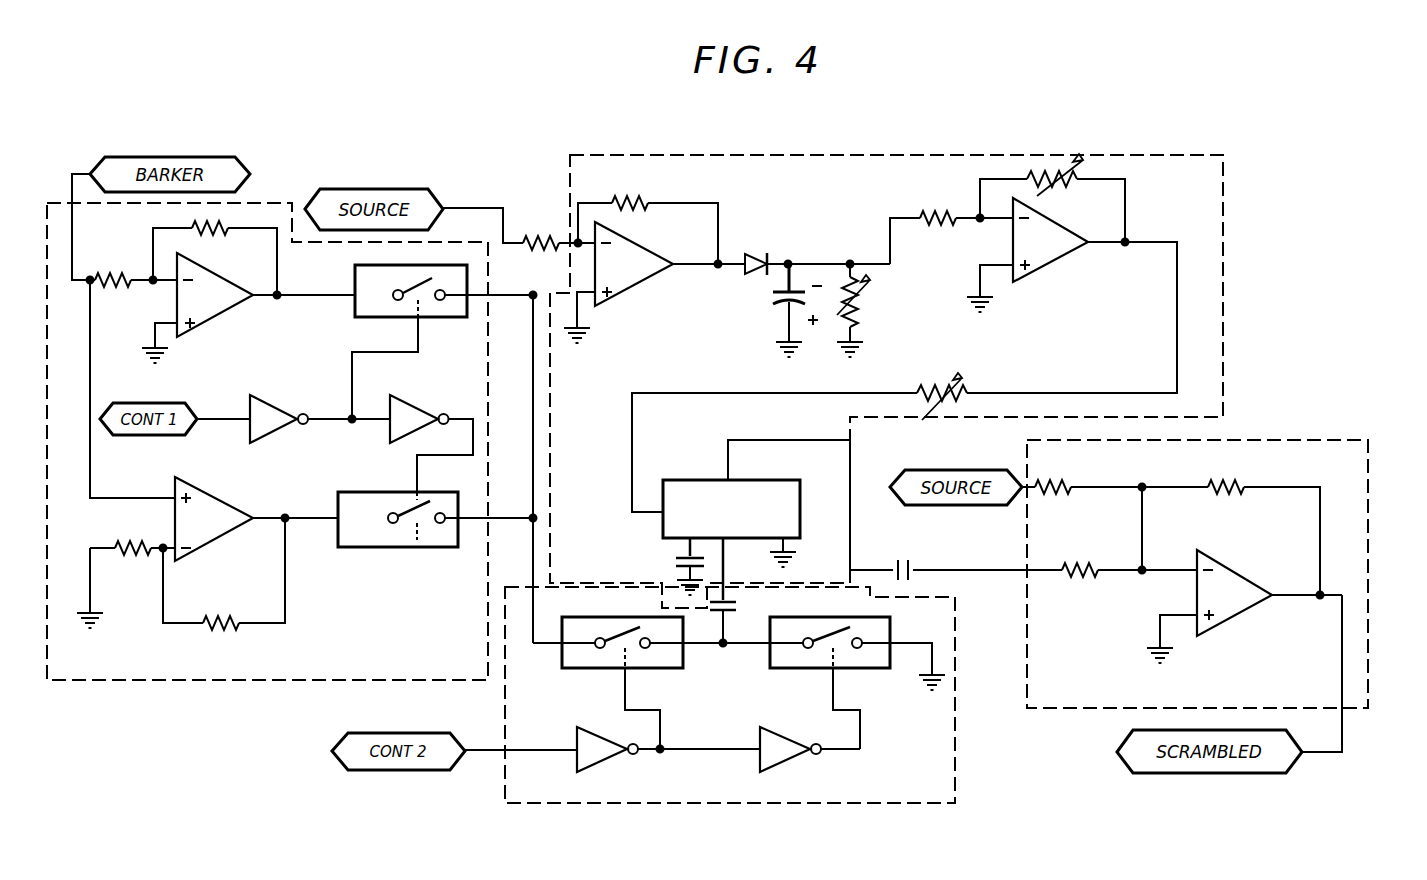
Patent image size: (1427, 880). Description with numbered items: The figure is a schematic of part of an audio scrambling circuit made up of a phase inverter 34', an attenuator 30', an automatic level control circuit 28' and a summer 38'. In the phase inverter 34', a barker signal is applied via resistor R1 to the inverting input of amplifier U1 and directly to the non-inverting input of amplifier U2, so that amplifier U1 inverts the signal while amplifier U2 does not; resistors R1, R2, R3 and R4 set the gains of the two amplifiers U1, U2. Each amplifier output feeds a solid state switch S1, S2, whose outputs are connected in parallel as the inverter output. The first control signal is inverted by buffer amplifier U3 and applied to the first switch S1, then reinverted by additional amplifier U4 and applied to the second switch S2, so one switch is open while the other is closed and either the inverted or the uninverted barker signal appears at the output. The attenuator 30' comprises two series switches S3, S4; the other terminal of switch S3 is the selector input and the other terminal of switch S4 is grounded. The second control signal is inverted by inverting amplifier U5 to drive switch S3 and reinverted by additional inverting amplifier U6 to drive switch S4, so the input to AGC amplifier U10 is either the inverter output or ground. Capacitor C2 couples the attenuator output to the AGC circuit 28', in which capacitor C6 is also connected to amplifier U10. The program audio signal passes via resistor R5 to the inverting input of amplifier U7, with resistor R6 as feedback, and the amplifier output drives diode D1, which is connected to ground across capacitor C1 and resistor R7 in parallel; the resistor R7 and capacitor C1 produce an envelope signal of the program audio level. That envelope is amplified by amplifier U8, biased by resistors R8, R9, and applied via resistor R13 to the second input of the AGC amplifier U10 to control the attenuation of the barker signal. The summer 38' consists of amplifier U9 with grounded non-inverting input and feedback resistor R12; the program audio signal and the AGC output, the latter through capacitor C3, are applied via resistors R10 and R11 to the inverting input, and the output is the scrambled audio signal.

The automatic level control circuit 28' is at (872, 382).
The attenuator 30' is at (730, 715).
The phase inverter 34' is at (292, 465).
The summer 38' is at (1197, 604).
The resistor R1 is at (120, 267).
The resistor R2 is at (214, 258).
The resistor R3 is at (126, 570).
The resistor R4 is at (224, 590).
The resistor R5 is at (558, 229).
The resistor R6 is at (648, 216).
The resistor R7 is at (870, 310).
The resistor R8 is at (951, 222).
The resistor R9 is at (1052, 198).
The resistor R10 is at (1121, 473).
The resistor R11 is at (1129, 532).
The resistor R12 is at (1264, 523).
The resistor R13 is at (799, 435).
The capacitor C1 is at (778, 310).
The capacitor C2 is at (740, 590).
The capacitor C3 is at (980, 557).
The capacitor C6 is at (672, 562).
The diode D1 is at (817, 247).
The amplifier U1 is at (248, 308).
The amplifier U2 is at (256, 519).
The buffer amplifier U3 is at (320, 429).
The additional amplifier U4 is at (431, 433).
The inverting amplifier U5 is at (668, 758).
The additional inverting amplifier U6 is at (810, 758).
The amplifier U7 is at (654, 282).
The amplifier U8 is at (1072, 295).
The amplifier U9 is at (1244, 606).
The AGC amplifier U10 is at (756, 487).
The first switch S1 is at (425, 320).
The second switch S2 is at (415, 545).
The switch S3 is at (618, 670).
The switch S4 is at (826, 670).